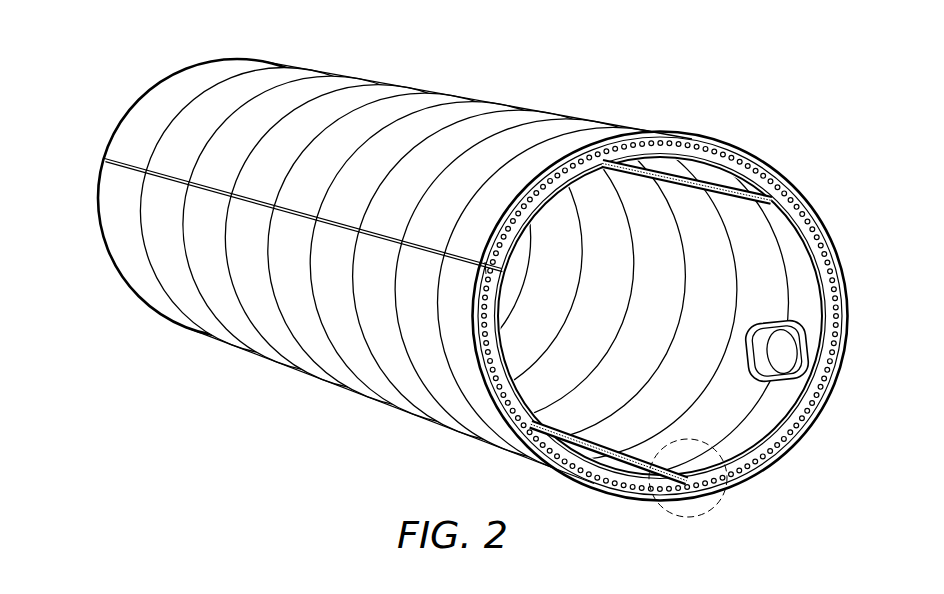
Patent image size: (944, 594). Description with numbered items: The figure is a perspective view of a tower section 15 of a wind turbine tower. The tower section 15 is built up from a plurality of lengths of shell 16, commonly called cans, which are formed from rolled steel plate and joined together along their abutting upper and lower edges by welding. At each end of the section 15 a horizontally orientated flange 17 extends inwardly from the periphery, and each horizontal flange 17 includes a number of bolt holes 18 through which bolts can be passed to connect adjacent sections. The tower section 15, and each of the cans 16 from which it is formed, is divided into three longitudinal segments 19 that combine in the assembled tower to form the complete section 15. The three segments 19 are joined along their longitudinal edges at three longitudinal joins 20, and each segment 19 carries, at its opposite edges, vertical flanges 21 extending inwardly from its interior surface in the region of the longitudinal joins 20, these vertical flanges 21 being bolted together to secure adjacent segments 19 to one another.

The tower section 15 is at (539, 78).
The length of shell 16 is at (306, 90).
The horizontal flange 17 is at (790, 448).
The bolt hole 18 is at (758, 470).
The longitudinal segment 19 is at (190, 59).
The longitudinal join 20 is at (122, 159).
The vertical flange 21 is at (729, 192).